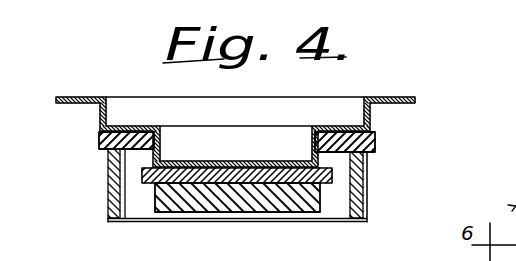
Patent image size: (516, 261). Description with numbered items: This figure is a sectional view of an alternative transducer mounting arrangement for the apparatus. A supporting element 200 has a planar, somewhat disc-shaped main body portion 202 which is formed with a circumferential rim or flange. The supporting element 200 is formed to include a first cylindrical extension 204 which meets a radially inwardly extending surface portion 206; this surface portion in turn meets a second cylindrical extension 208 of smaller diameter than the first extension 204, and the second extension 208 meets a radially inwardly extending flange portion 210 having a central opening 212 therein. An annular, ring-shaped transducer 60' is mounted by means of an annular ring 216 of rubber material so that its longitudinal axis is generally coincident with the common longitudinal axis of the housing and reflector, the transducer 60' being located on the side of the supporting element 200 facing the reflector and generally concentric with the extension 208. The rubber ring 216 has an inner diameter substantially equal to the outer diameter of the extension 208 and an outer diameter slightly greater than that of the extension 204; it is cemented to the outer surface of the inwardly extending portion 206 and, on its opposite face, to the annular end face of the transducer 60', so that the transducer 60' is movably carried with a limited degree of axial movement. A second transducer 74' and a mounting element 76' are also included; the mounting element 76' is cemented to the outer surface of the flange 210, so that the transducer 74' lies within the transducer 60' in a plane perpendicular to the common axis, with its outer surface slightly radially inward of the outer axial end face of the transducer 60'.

The supporting element 200 is at (430, 96).
The main body portion 202 is at (78, 97).
The first cylindrical extension 204 is at (360, 106).
The radially inwardly extending surface portion 206 is at (137, 126).
The second cylindrical extension 208 is at (163, 161).
The radially inwardly extending flange portion 210 is at (293, 162).
The central opening 212 is at (258, 161).
The annular ring 216 is at (372, 142).
The transducer 60' is at (259, 202).
The transducer 74' is at (237, 219).
The mounting element 76' is at (184, 178).